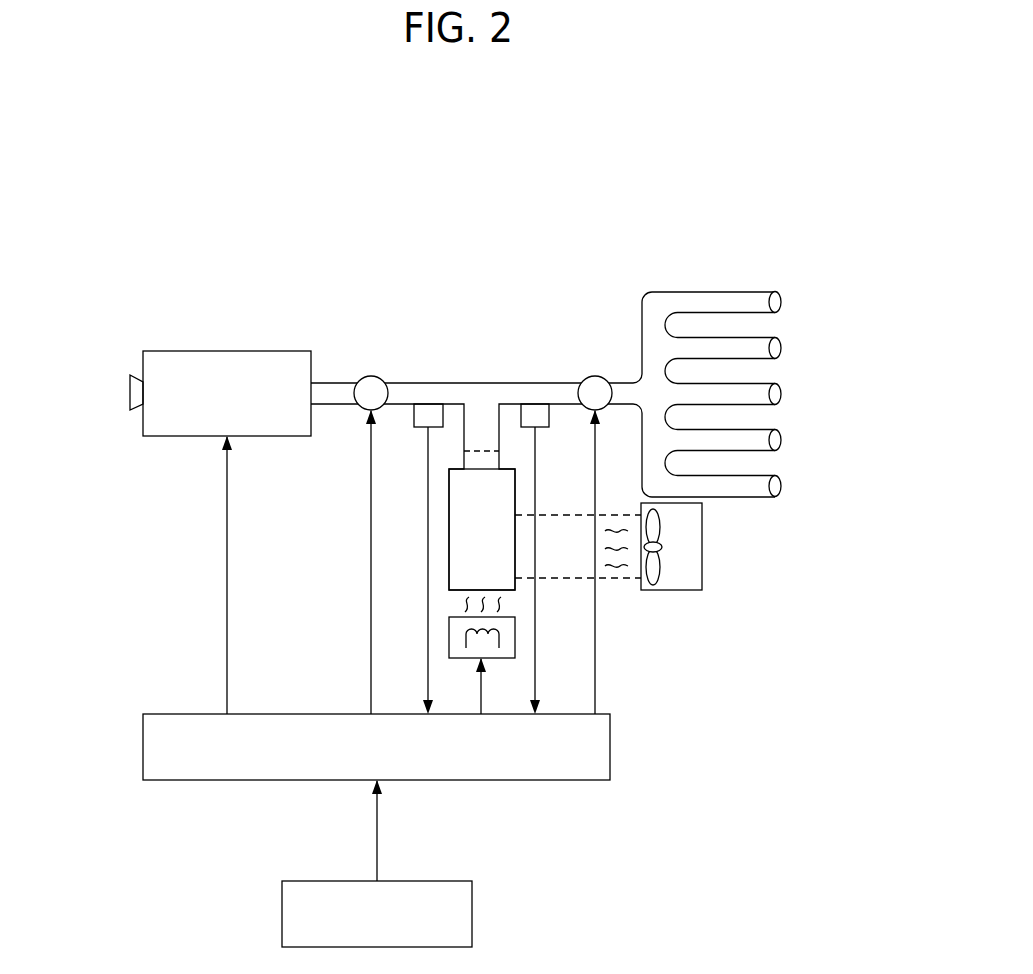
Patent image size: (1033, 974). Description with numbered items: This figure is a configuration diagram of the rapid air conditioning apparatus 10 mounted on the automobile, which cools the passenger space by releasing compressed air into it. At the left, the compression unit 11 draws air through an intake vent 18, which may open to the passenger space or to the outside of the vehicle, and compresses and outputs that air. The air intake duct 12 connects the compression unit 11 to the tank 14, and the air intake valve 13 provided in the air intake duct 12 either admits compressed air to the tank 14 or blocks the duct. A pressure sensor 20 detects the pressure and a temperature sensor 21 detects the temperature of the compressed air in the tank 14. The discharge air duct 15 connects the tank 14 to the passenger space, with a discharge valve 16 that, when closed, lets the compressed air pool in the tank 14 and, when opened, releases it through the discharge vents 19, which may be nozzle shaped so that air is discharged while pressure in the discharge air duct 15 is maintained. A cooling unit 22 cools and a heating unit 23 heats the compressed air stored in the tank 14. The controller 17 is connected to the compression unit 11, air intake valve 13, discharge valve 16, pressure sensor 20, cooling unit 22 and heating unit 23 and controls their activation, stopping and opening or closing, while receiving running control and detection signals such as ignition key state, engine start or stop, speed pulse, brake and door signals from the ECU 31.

The rapid air conditioning apparatus 10 is at (444, 256).
The compression unit 11 is at (215, 351).
The air intake duct 12 is at (317, 350).
The air intake valve 13 is at (364, 407).
The tank 14 is at (515, 579).
The discharge air duct 15 is at (673, 362).
The discharge valve 16 is at (595, 376).
The controller 17 is at (610, 742).
The intake vent 18 is at (130, 391).
The discharge vent 19 is at (752, 394).
The pressure sensor 20 is at (541, 427).
The temperature sensor 21 is at (422, 427).
The cooling unit 22 is at (702, 553).
The heating unit 23 is at (515, 630).
The ECU 31 is at (472, 905).